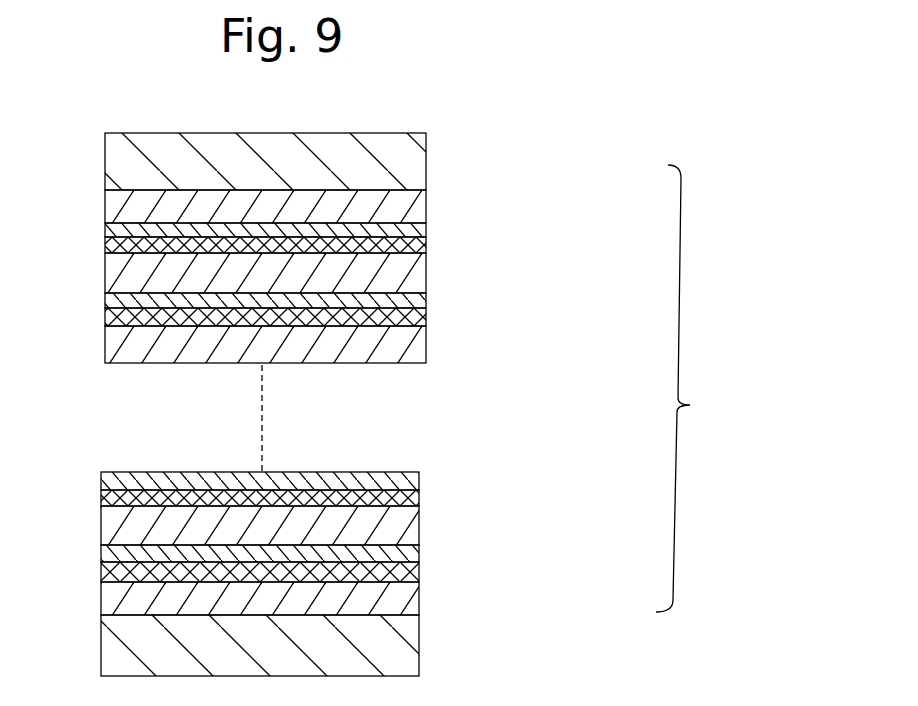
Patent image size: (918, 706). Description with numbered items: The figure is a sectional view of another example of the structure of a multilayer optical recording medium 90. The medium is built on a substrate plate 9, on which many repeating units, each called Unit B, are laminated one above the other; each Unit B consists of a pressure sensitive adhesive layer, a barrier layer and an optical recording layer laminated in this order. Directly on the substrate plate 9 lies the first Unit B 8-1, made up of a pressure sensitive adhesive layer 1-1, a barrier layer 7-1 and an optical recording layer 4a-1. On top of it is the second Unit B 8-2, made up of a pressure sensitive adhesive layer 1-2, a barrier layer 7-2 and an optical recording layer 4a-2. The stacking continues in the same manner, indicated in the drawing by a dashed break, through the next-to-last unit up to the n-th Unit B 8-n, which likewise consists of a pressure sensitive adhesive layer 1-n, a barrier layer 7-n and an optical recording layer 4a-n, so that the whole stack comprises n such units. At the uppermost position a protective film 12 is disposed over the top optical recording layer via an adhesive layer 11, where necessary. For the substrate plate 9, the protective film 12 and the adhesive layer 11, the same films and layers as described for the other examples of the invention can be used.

The multilayer optical recording medium 90 is at (407, 98).
The protective film 12 is at (106, 165).
The adhesive layer 11 is at (106, 203).
The optical recording layer 4a-n is at (427, 223).
The barrier layer 7-n is at (427, 243).
The pressure sensitive adhesive layer 1-n is at (427, 267).
The n-th Unit B 8-n is at (566, 190).
The optical recording layer 4a-2 is at (420, 480).
The barrier layer 7-2 is at (420, 500).
The pressure sensitive adhesive layer 1-2 is at (420, 528).
The second Unit B 8-2 is at (525, 462).
The optical recording layer 4a-1 is at (420, 557).
The barrier layer 7-1 is at (420, 575).
The pressure sensitive adhesive layer 1-1 is at (420, 602).
The first Unit B 8-1 is at (525, 534).
The substrate plate 9 is at (420, 645).